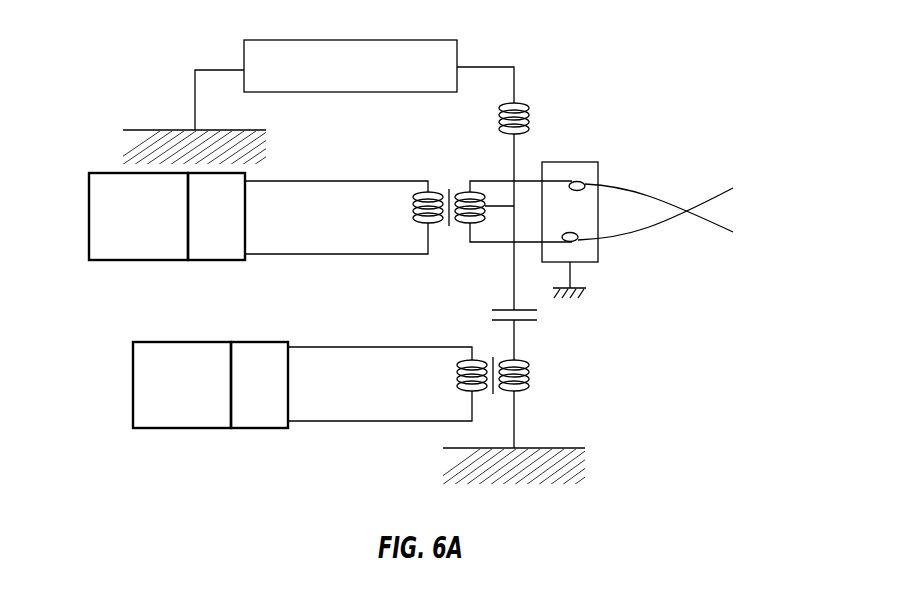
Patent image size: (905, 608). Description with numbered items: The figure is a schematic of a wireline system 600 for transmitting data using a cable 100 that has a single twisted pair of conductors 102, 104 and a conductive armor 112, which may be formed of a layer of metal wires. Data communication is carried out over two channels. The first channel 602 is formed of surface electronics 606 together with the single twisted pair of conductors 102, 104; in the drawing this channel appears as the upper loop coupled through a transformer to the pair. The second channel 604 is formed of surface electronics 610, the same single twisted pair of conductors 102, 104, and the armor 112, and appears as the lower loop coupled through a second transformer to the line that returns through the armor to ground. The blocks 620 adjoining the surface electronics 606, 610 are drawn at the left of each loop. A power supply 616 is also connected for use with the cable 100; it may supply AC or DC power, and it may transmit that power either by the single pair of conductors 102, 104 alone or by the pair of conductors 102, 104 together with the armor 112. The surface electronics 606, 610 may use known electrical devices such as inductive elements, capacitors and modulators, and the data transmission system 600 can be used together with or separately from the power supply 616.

The system 600 is at (678, 56).
The power supply 616 is at (266, 40).
The cable 100 is at (493, 66).
The armor 112 is at (580, 162).
The conductor 102 is at (633, 189).
The conductor 104 is at (633, 234).
The first channel 602 is at (370, 180).
The second channel 604 is at (405, 347).
The electrode 620 is at (112, 261).
The surface electronics 606 is at (215, 261).
The surface electronics 610 is at (260, 429).